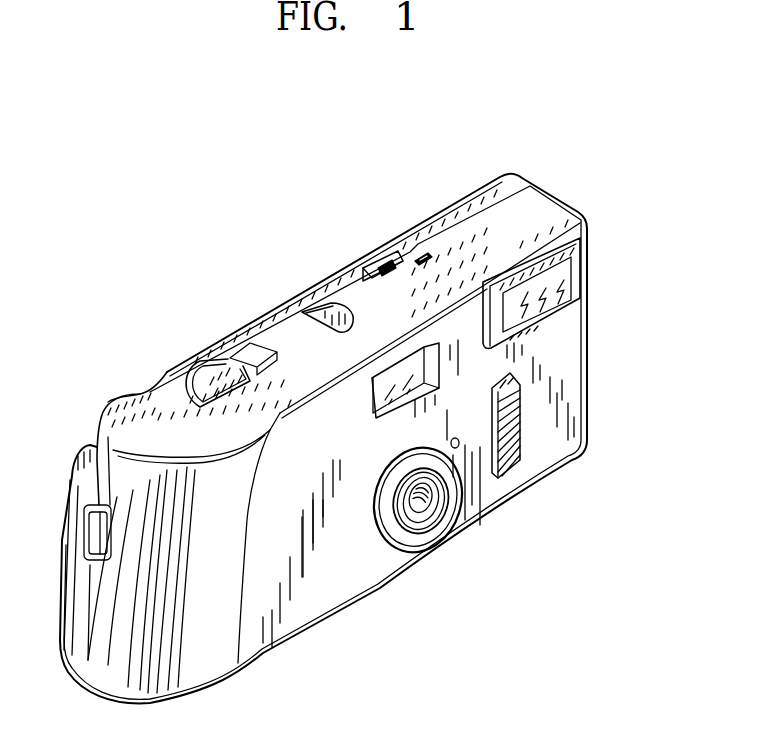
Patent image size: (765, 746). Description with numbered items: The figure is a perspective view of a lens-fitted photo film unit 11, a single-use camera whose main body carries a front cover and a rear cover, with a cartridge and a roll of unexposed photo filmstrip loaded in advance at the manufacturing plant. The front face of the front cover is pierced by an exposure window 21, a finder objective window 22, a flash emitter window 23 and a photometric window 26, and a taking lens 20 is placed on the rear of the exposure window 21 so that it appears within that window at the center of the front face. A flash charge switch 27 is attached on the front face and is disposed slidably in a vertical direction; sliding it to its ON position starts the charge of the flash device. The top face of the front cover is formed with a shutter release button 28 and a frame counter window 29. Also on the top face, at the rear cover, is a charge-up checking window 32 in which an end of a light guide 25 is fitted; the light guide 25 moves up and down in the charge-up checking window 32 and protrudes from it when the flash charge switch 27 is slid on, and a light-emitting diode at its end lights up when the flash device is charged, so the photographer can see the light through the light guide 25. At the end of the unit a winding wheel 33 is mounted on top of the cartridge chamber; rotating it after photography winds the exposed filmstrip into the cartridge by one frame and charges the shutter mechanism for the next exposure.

The lens-fitted photo film unit 11 is at (452, 150).
The taking lens 20 is at (432, 498).
The exposure window 21 is at (418, 512).
The finder objective window 22 is at (373, 411).
The flash emitter window 23 is at (574, 268).
The light guide 25 is at (372, 272).
The photometric window 26 is at (458, 437).
The flash charge switch 27 is at (512, 440).
The shutter release button 28 is at (203, 383).
The frame counter window 29 is at (310, 309).
The charge-up checking window 32 is at (388, 262).
The winding wheel 33 is at (122, 393).